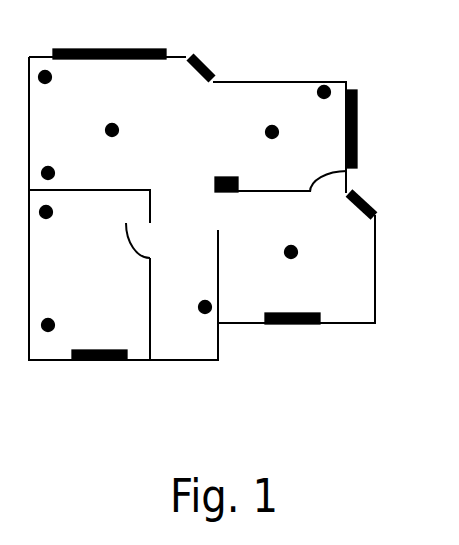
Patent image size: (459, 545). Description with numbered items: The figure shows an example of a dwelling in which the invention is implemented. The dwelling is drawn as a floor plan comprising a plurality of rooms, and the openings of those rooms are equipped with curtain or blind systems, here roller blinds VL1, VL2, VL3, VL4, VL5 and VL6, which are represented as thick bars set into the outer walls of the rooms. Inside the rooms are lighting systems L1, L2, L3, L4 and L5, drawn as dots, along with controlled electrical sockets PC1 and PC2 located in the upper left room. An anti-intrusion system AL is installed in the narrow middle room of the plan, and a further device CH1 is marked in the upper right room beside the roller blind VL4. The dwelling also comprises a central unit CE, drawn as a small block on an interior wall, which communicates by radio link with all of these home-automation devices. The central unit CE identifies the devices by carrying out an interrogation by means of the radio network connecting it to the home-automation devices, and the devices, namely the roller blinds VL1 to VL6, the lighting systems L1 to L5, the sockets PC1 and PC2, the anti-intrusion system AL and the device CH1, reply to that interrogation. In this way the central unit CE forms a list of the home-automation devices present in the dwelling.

The roller blind VL1 is at (98, 360).
The roller blind VL2 is at (300, 324).
The roller blind VL3 is at (366, 199).
The roller blind VL4 is at (357, 146).
The roller blind VL5 is at (205, 63).
The roller blind VL6 is at (110, 49).
The central unit CE is at (222, 177).
The controlled electrical socket PC1 is at (50, 80).
The controlled electrical socket PC2 is at (53, 170).
The lighting system L1 is at (53, 323).
The lighting system L2 is at (51, 215).
The lighting system L3 is at (296, 249).
The lighting system L4 is at (277, 129).
The lighting system L5 is at (117, 128).
The heater 1 CH1 is at (329, 89).
The anti-intrusion system AL is at (200, 305).